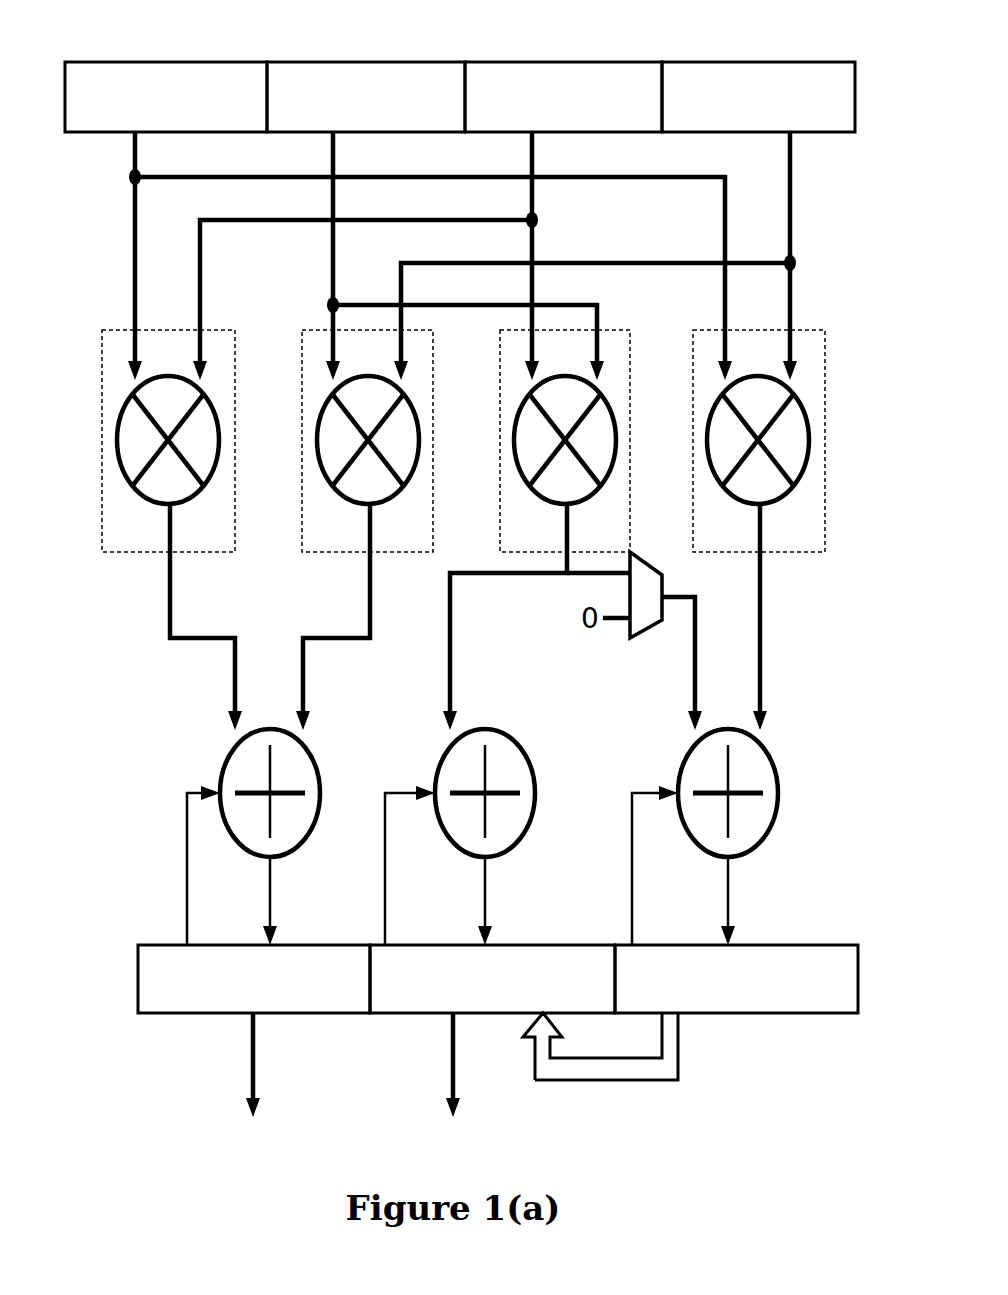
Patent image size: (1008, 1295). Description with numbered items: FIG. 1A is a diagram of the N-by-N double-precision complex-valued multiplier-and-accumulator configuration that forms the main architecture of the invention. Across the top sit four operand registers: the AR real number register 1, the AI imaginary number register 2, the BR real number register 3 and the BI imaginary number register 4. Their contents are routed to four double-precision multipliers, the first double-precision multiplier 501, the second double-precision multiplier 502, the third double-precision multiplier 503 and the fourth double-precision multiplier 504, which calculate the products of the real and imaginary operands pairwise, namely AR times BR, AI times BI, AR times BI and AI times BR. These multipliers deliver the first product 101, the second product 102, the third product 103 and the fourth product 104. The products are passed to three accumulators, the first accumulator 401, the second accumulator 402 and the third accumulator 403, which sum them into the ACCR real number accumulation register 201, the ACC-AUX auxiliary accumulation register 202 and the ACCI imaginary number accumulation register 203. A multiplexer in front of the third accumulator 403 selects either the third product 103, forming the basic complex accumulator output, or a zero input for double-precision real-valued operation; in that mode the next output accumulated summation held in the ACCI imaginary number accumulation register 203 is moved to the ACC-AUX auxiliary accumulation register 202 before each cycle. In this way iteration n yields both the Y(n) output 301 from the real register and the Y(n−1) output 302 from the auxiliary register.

The AR real number register 1 is at (198, 87).
The AI imaginary number register 2 is at (397, 87).
The BR real number register 3 is at (595, 87).
The BI imaginary number register 4 is at (790, 87).
The P0 product 101 is at (120, 528).
The P1 product 102 is at (320, 528).
The P2 product 103 is at (518, 528).
The P3 product 104 is at (712, 528).
The C1 double-precision multiplier 501 is at (120, 422).
The C2 double-precision multiplier 502 is at (320, 422).
The C3 double-precision multiplier 503 is at (518, 422).
The C4 double-precision multiplier 504 is at (713, 422).
The M1 accumulator 401 is at (178, 728).
The M2 accumulator 402 is at (420, 728).
The M3 accumulator 403 is at (645, 728).
The ACCR real number accumulation register 201 is at (155, 978).
The ACC-AUX auxiliary accumulation register 202 is at (395, 992).
The ACCI imaginary number accumulation register 203 is at (810, 982).
The Y(n) output 301 is at (178, 1100).
The Y(n-1) output 302 is at (345, 1095).